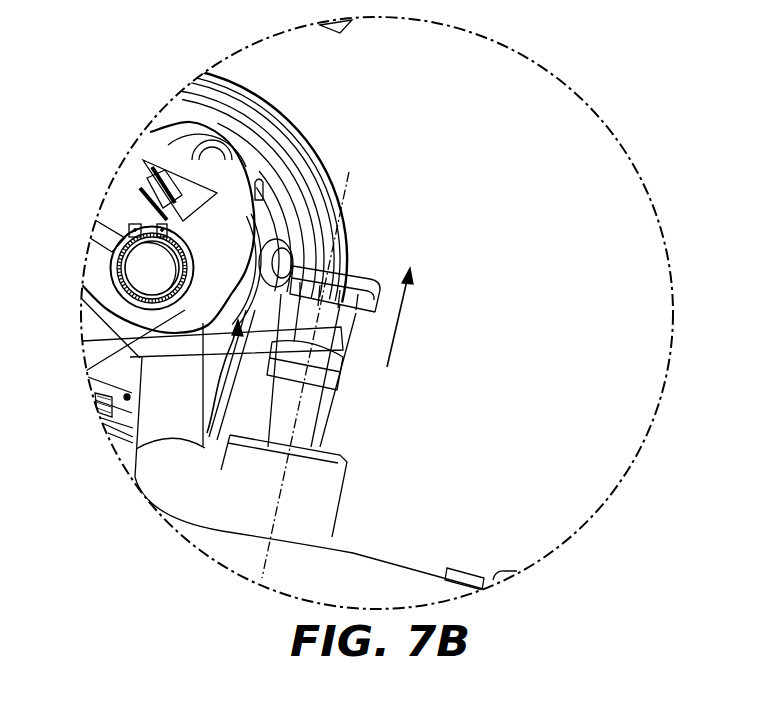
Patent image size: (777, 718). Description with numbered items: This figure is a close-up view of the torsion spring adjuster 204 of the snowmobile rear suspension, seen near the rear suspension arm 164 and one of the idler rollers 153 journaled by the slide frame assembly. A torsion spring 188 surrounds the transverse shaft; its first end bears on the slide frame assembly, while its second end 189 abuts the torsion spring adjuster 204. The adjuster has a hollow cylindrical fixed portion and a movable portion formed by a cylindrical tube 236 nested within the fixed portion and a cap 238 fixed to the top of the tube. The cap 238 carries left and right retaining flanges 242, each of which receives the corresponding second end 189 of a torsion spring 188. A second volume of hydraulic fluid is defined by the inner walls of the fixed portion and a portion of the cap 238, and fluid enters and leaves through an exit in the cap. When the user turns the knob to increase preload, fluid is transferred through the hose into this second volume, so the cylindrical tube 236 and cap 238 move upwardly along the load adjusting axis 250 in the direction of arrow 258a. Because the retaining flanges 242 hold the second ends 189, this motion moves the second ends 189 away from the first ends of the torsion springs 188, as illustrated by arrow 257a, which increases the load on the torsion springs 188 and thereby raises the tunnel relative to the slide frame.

The idler roller 153 is at (308, 139).
The torsion spring 188 is at (227, 192).
The second end 189 is at (180, 349).
The arrow 257a is at (207, 435).
The load adjusting axis 250 is at (348, 178).
The cap 238 is at (382, 300).
The arrow 258a is at (401, 317).
The cylindrical tube 236 is at (311, 420).
The retaining flange 242 is at (340, 379).
The torsion spring adjuster 204 is at (347, 470).
The rear suspension arm 164 is at (358, 568).